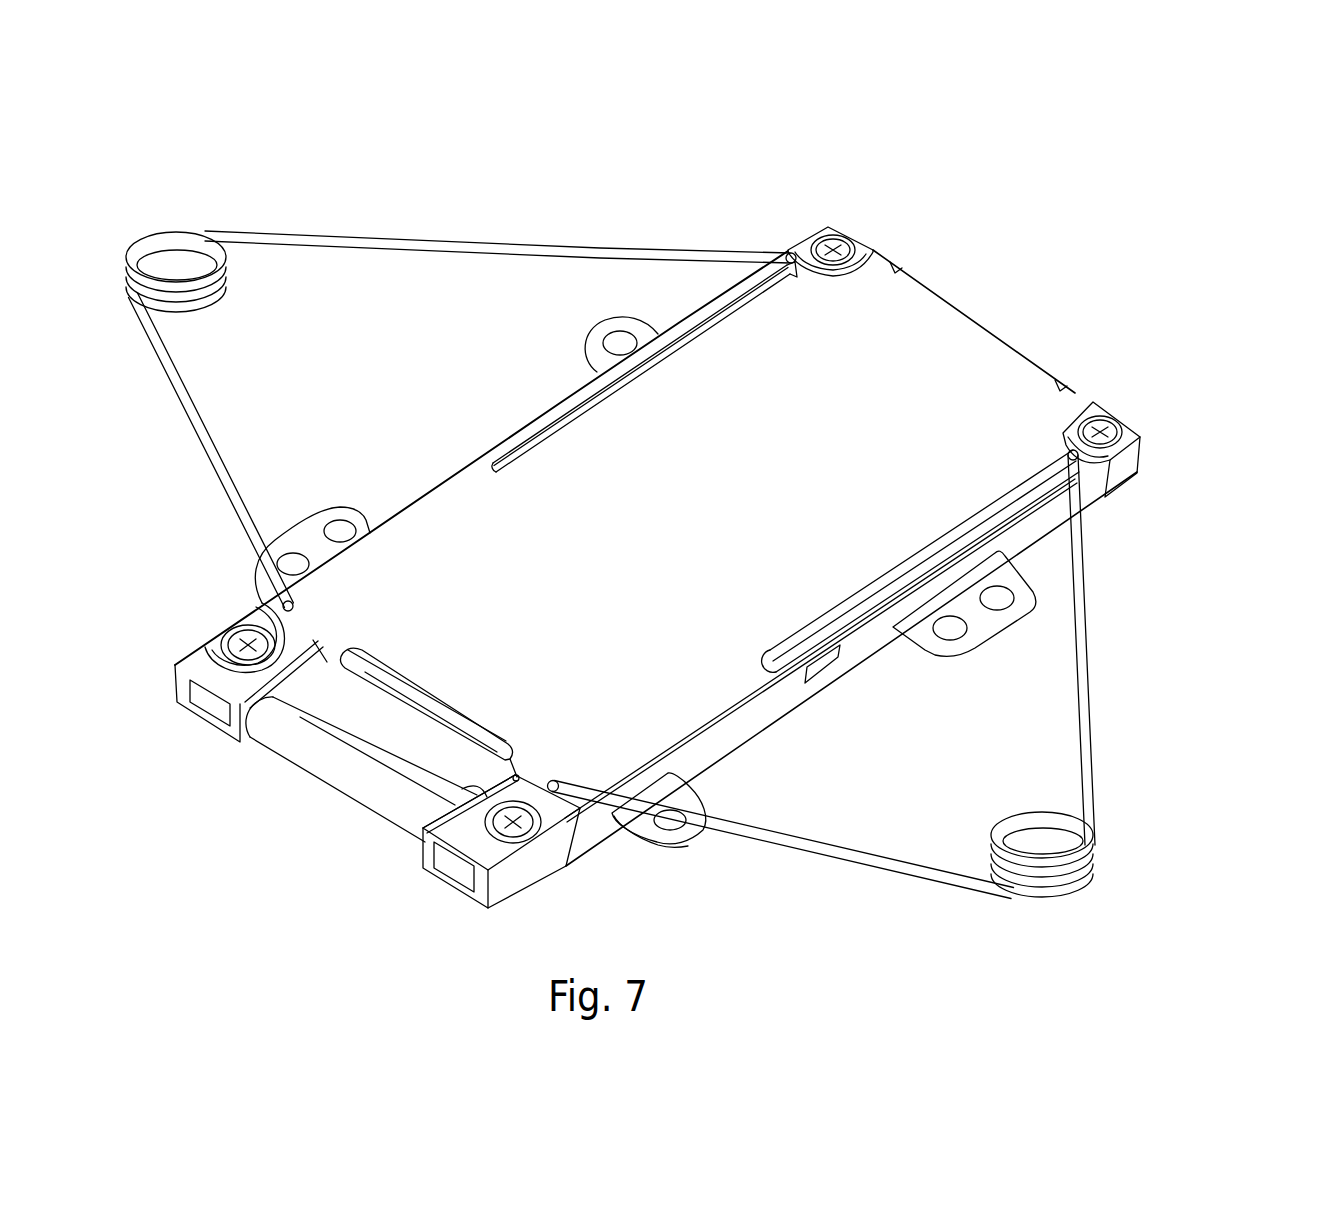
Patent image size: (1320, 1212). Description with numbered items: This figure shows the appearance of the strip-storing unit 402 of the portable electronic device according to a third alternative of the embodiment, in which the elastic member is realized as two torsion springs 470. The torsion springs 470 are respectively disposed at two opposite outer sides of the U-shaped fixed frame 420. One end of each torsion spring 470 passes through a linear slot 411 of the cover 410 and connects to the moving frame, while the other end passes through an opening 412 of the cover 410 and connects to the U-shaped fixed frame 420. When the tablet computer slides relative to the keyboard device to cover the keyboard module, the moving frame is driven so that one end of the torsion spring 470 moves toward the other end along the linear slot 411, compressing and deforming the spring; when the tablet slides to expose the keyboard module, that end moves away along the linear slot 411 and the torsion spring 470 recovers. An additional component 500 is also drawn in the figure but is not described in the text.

The strip-storing unit 402 is at (1150, 200).
The cover 410 is at (983, 343).
The linear slot 411 is at (1008, 497).
The opening 412 is at (562, 790).
The U-shaped fixed frame 420 is at (1157, 461).
The torsion spring 470 is at (433, 242).
The roller member 500 is at (322, 787).